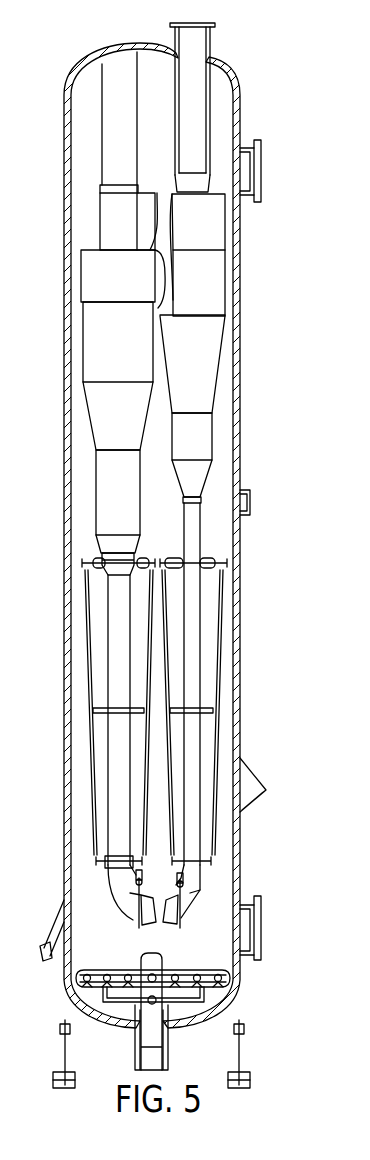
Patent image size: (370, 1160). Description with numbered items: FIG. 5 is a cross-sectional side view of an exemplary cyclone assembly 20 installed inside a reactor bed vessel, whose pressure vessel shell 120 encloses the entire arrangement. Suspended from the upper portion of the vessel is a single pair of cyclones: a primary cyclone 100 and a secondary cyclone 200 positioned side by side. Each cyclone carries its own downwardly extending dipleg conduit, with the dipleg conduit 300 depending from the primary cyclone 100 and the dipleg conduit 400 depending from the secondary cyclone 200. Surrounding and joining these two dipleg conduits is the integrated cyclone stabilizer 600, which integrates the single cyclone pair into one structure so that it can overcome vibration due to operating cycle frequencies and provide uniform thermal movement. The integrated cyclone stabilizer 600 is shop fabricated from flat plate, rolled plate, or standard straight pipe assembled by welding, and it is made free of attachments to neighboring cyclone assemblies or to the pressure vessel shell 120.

The cyclone assembly 20 is at (60, 73).
The pressure vessel shell 120 is at (62, 106).
The primary cyclone 100 is at (117, 356).
The secondary cyclone 200 is at (195, 376).
The dipleg conduit 300 is at (117, 548).
The dipleg conduit 400 is at (195, 551).
The integrated cyclone stabilizer 600 is at (82, 645).